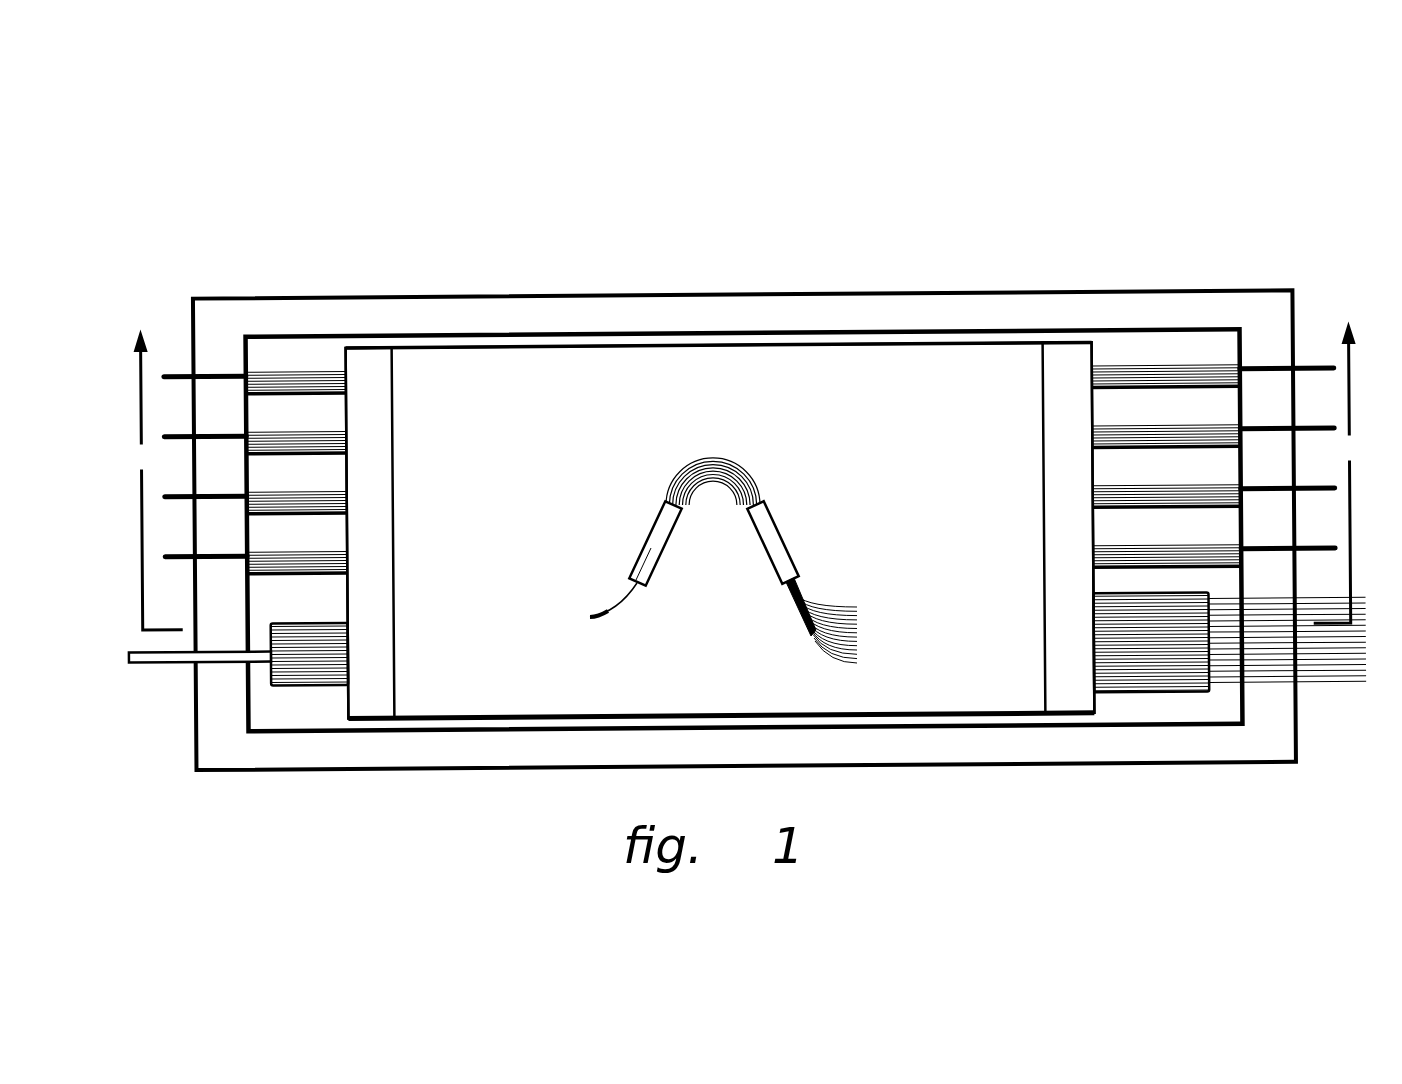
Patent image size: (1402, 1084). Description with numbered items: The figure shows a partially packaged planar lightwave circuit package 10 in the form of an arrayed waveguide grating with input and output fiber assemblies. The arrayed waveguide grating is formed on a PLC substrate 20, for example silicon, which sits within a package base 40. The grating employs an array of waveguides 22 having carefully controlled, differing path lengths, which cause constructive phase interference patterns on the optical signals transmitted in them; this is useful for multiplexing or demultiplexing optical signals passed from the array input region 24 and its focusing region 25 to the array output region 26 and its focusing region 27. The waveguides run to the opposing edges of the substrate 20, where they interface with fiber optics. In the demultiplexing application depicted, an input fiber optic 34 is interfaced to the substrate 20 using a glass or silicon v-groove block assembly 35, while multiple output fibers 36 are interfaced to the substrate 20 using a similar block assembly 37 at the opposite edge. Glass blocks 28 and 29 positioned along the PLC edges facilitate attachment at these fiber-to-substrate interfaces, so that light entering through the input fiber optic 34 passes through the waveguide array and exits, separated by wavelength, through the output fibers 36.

The planar lightwave circuit package 10 is at (747, 509).
The PLC substrate 20 is at (1022, 425).
The array of waveguides 22 is at (750, 481).
The array input region 24 is at (600, 616).
The array input focusing region 25 is at (653, 532).
The array output region 26 is at (853, 617).
The array output focusing region 27 is at (773, 532).
The glass block 28 is at (374, 362).
The glass block 29 is at (1063, 355).
The input fiber optic 34 is at (162, 663).
The v-groove block assembly 35 is at (307, 685).
The output fibers 36 is at (1328, 682).
The block assembly 37 is at (1142, 675).
The package base 40 is at (913, 745).